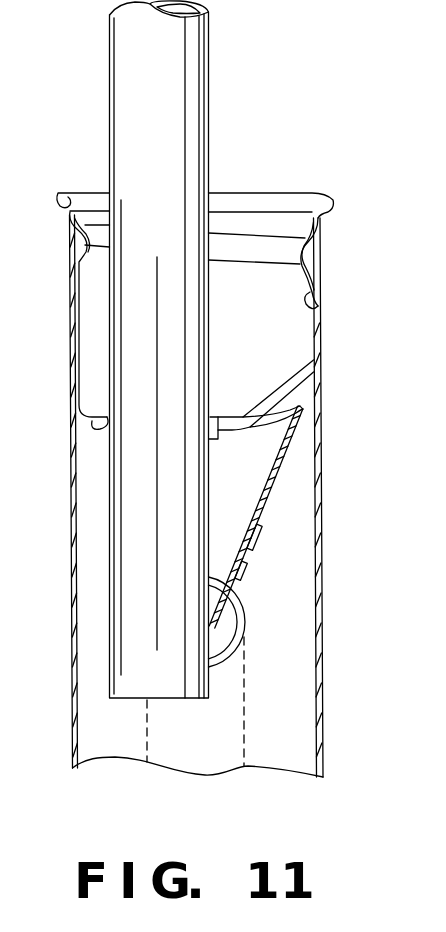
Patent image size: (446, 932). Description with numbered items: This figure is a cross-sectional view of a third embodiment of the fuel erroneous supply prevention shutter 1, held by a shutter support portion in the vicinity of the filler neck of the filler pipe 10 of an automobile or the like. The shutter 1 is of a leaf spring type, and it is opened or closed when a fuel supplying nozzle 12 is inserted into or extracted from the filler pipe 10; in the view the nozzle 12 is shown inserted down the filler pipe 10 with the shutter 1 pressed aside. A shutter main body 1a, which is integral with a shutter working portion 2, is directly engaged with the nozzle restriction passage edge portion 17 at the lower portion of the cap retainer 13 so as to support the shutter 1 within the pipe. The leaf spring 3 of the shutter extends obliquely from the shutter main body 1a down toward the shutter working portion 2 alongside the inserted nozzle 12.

The fuel erroneous supply prevention shutter 1 is at (278, 551).
The shutter main body 1a is at (303, 395).
The shutter working portion 2 is at (243, 575).
The leaf spring 3 is at (284, 445).
The filler pipe 10 is at (322, 695).
The fuel supplying nozzle 12 is at (119, 599).
The cap retainer 13 is at (316, 300).
The nozzle restriction passage edge portion 17 is at (84, 429).